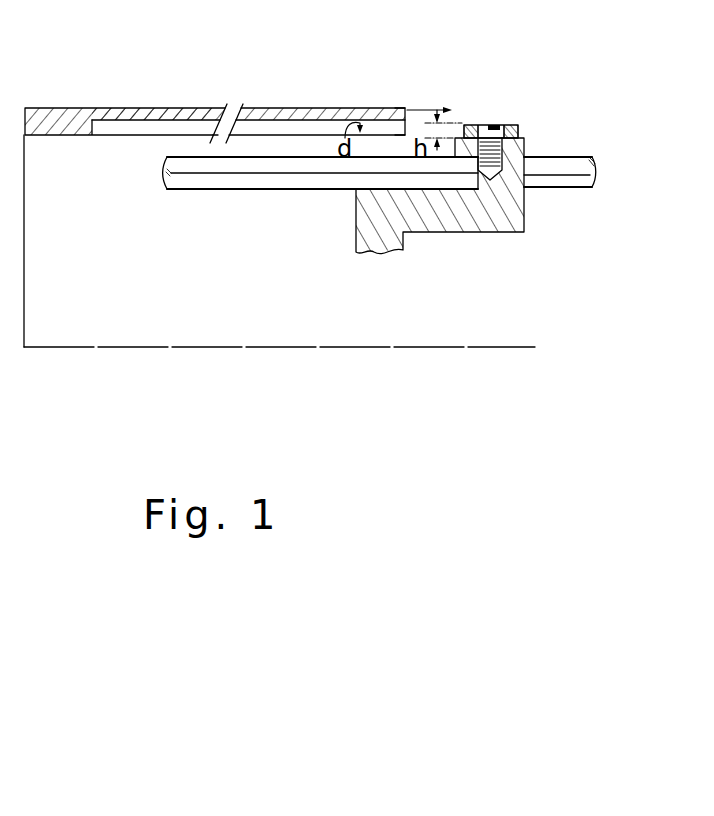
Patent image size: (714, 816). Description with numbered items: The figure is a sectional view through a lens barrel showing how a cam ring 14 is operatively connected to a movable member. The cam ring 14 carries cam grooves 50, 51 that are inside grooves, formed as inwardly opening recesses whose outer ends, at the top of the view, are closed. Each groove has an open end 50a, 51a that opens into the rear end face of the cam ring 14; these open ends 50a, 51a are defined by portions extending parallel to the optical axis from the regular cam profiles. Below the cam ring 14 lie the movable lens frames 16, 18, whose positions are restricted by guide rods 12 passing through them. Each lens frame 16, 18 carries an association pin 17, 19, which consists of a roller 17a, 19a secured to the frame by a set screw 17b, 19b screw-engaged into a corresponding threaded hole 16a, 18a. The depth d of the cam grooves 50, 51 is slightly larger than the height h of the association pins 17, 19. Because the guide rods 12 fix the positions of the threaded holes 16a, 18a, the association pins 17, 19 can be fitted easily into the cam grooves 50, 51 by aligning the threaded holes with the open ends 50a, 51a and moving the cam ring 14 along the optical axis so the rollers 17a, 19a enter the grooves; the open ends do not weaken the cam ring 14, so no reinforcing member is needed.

The cam ring 14 is at (68, 108).
The cam groove 50 is at (249, 89).
The cam groove 51 is at (181, 128).
The open end 50a is at (353, 86).
The open end 51a is at (407, 124).
The guide rod 12 is at (286, 178).
The movable lens frame 16 is at (440, 212).
The movable lens frame 18 is at (450, 218).
The threaded hole 16a is at (563, 196).
The threaded hole 18a is at (508, 203).
The association pin 17 is at (538, 96).
The association pin 19 is at (540, 96).
The roller 17a is at (556, 93).
The roller 19a is at (517, 127).
The set screw 17b is at (543, 71).
The set screw 19b is at (471, 110).